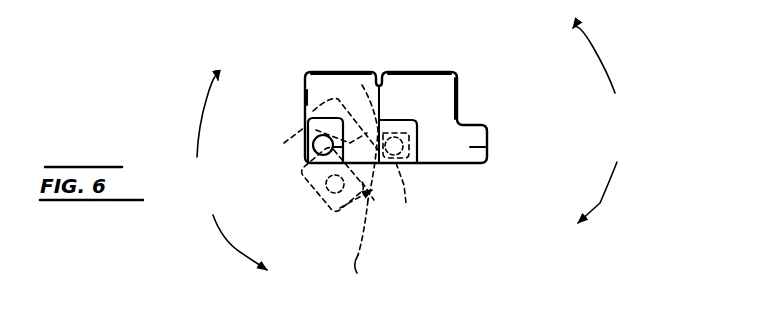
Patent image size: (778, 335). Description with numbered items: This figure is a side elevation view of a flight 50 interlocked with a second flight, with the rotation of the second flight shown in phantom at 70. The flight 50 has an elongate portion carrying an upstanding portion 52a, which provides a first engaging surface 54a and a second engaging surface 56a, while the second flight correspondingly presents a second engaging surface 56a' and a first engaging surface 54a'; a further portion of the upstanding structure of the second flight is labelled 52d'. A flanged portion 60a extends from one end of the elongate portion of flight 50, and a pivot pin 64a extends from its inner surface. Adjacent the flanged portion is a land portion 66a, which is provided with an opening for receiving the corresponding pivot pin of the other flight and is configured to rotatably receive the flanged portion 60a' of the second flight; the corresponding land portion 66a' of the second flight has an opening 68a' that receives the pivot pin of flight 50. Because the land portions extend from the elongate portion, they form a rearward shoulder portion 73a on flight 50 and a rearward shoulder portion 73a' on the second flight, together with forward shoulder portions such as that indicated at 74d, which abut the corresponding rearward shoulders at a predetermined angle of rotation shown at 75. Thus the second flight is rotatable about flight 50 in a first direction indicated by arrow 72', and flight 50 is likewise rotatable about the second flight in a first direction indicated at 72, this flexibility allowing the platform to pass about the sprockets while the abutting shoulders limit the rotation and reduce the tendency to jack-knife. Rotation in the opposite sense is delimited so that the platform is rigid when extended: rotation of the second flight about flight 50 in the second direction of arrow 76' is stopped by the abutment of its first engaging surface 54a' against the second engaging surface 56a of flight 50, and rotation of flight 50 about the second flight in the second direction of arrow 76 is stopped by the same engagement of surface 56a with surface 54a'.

The flight 50 is at (257, 43).
The left block portion 52d' is at (319, 45).
The second engaging surface 56a is at (361, 85).
The first engaging surface 54a' is at (419, 46).
The upstanding portion 52a is at (442, 80).
The first engaging surface 54a is at (497, 83).
The land portion 66a is at (470, 108).
The flanged portion 60a is at (510, 150).
The flanged portion 60a' is at (434, 159).
The pivot pin 64a is at (406, 200).
The opening 68a' is at (285, 155).
The second engaging surface 56a' is at (270, 79).
The land portion 66a' is at (271, 104).
The rearward shoulder portion 73a' is at (300, 156).
The rearward shoulder portion 73a is at (351, 118).
The phantom lead line 74d is at (378, 242).
The predetermined angle of rotation 75 is at (383, 194).
The phantom representation of rotated flight 70 is at (345, 218).
The arrow representing first direction 72' is at (216, 242).
The first direction 72 is at (630, 192).
The arrow representing second direction 76 is at (624, 60).
The arrow representing second direction 76' is at (176, 116).